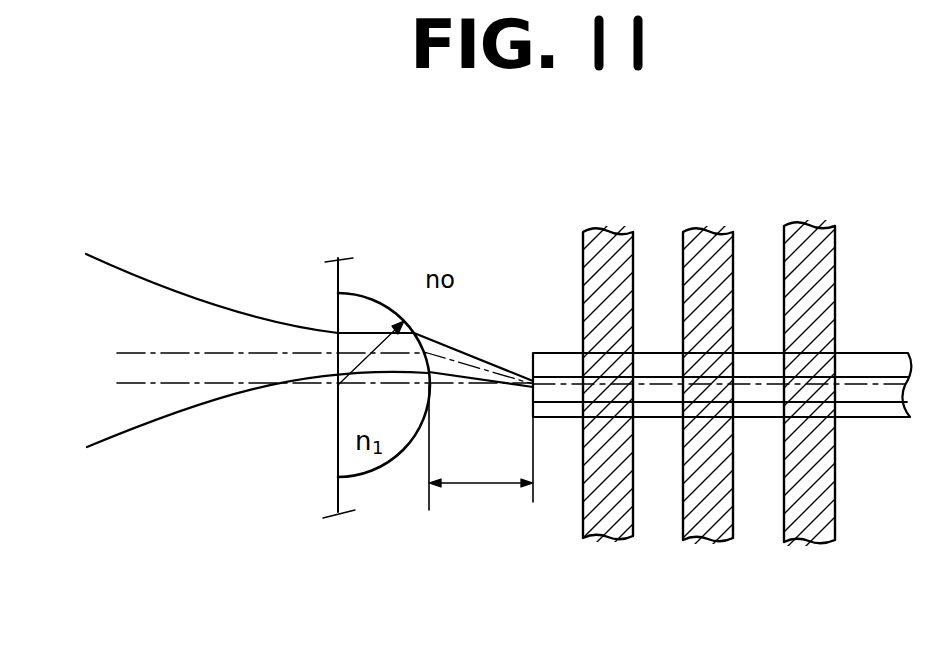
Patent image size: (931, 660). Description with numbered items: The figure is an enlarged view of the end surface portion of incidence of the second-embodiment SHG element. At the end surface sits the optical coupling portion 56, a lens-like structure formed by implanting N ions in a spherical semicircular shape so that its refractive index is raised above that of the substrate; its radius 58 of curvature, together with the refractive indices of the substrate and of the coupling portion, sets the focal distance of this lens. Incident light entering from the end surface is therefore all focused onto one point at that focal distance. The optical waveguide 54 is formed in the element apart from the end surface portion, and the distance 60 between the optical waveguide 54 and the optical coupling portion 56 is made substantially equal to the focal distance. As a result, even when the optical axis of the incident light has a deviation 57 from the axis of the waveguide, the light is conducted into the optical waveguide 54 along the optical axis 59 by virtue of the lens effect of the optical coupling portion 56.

The optical waveguide 54 is at (553, 418).
The optical coupling portion 56 is at (356, 318).
The deviation 57 is at (192, 477).
The radius of curvature 58 is at (383, 373).
The optical axis 59 is at (472, 358).
The distance 60 is at (477, 485).